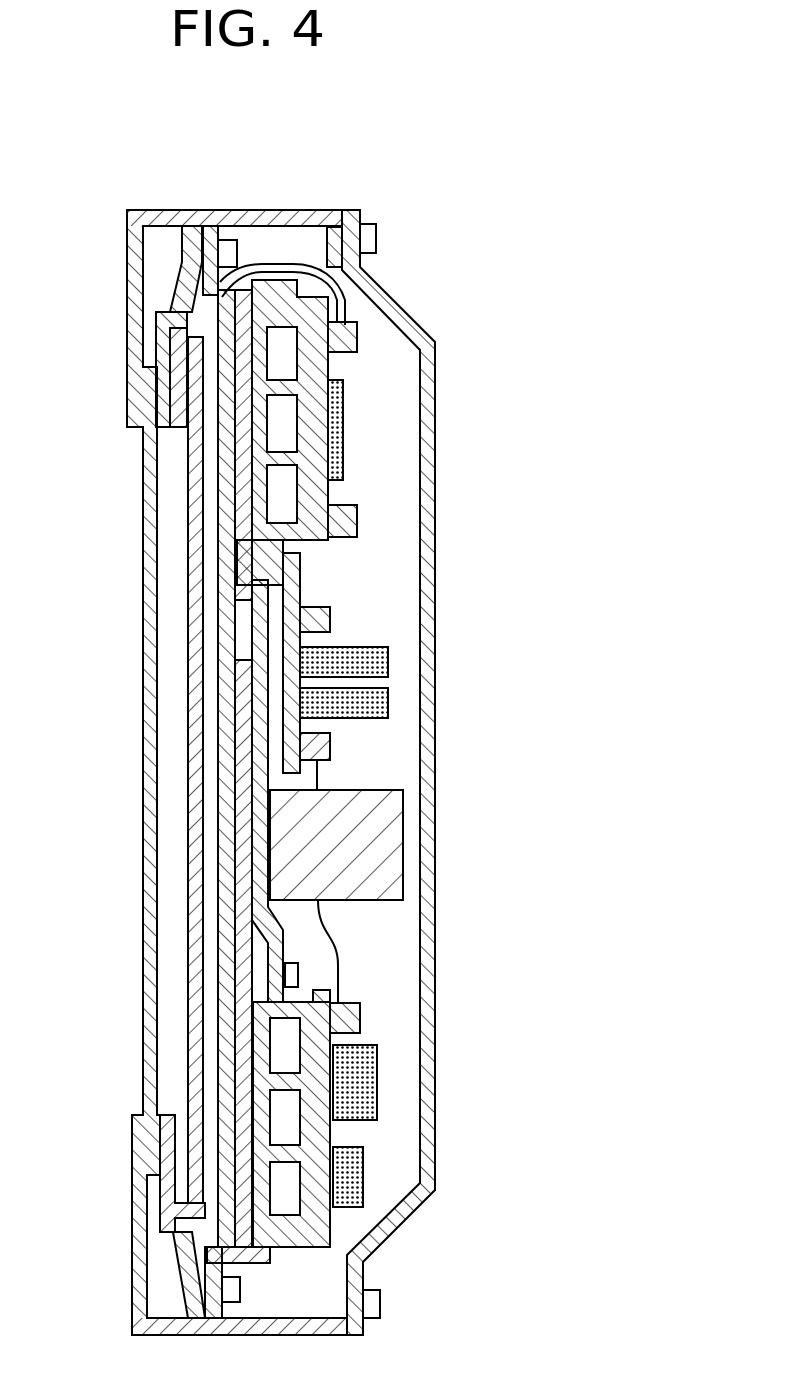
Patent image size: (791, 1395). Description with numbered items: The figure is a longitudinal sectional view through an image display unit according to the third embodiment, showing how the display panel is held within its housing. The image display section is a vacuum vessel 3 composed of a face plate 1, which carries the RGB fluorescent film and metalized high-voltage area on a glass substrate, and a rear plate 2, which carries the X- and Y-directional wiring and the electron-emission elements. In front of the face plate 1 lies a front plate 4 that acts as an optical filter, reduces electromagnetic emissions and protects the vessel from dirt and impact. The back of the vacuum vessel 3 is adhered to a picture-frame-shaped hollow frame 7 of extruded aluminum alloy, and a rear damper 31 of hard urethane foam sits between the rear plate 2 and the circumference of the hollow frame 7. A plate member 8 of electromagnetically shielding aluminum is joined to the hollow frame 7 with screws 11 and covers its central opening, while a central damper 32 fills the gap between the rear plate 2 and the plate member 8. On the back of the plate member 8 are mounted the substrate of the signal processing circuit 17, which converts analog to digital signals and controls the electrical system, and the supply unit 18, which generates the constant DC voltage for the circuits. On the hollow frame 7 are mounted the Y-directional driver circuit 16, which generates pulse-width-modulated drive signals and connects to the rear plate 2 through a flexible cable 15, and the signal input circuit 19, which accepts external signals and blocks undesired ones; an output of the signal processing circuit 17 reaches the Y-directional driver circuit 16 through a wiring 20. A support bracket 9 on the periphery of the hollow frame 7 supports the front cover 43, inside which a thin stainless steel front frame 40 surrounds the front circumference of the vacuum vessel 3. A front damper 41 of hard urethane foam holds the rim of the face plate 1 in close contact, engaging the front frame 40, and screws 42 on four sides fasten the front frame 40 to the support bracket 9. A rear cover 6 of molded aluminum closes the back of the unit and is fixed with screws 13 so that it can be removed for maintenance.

The face plate 1 is at (168, 768).
The rear plate 2 is at (228, 790).
The vacuum vessel 3 is at (212, 890).
The front plate 4 is at (150, 1055).
The rear cover 6 is at (437, 762).
The hollow frame 7 is at (287, 1118).
The plate member 8 is at (265, 627).
The support bracket 9 is at (188, 1262).
The screws 11 is at (298, 970).
The screws 13 is at (380, 1303).
The flexible cable 15 is at (343, 301).
The Y-directional driver circuit 16 is at (345, 425).
The signal processing circuit 17 is at (388, 663).
The supply unit 18 is at (403, 838).
The signal input circuit 19 is at (377, 1088).
The wiring 20 is at (337, 580).
The rear damper 31 is at (240, 481).
The central damper 32 is at (243, 703).
The front frame 40 is at (157, 350).
The front damper 41 is at (175, 408).
The screws 42 is at (182, 259).
The front cover 43 is at (140, 1243).